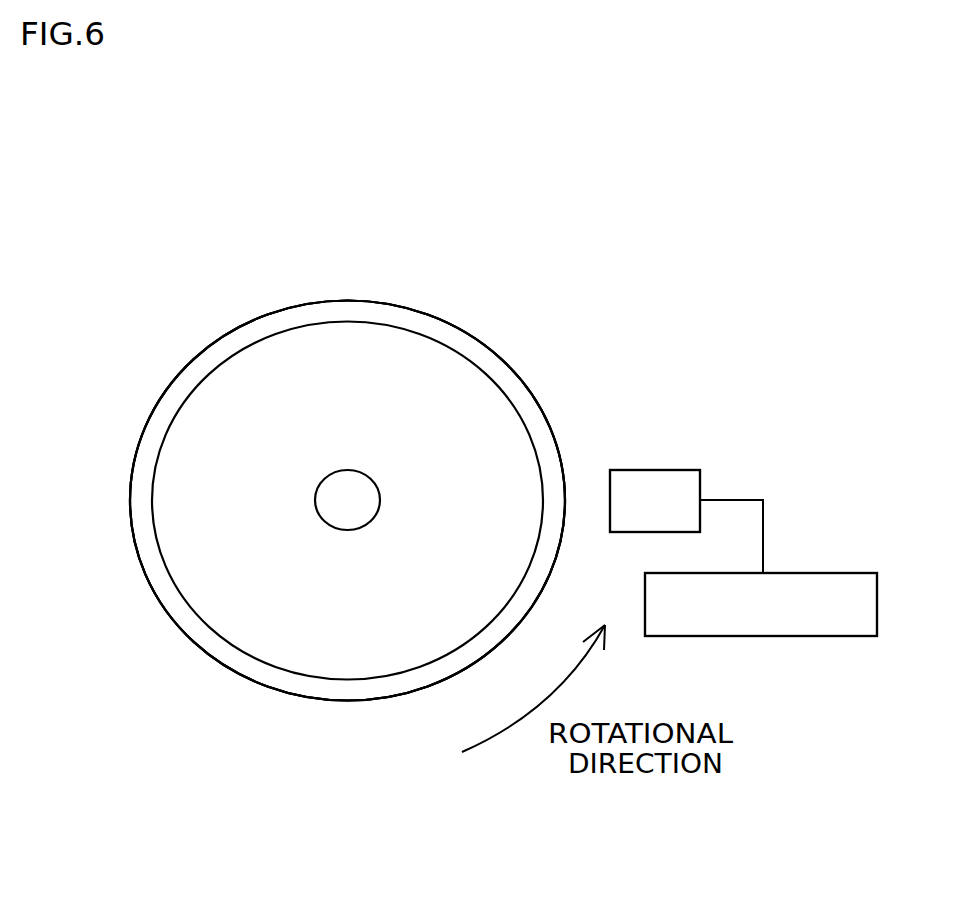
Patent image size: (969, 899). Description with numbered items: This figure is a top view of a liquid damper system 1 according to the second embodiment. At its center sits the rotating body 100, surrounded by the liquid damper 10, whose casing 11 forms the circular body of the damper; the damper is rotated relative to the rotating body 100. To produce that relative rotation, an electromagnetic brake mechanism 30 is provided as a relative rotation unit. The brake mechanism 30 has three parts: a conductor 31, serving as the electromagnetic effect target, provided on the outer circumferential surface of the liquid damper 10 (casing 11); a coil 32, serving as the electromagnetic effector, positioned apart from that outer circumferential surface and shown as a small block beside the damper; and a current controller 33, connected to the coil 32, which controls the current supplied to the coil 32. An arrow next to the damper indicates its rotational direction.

The liquid damper system 1 is at (110, 300).
The liquid damper 10 is at (228, 330).
The casing 11 is at (487, 398).
The conductor 31 is at (143, 478).
The rotating body 100 is at (380, 500).
The electromagnetic brake mechanism 30 is at (633, 398).
The coil 32 is at (657, 470).
The current controller 33 is at (826, 637).